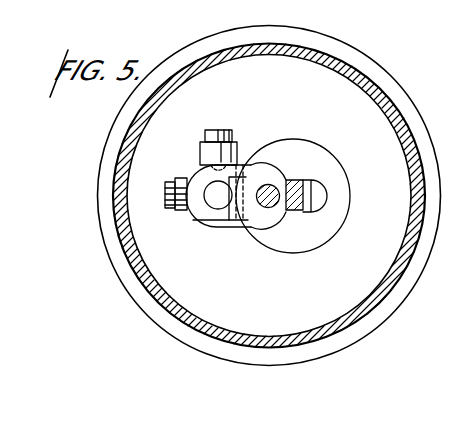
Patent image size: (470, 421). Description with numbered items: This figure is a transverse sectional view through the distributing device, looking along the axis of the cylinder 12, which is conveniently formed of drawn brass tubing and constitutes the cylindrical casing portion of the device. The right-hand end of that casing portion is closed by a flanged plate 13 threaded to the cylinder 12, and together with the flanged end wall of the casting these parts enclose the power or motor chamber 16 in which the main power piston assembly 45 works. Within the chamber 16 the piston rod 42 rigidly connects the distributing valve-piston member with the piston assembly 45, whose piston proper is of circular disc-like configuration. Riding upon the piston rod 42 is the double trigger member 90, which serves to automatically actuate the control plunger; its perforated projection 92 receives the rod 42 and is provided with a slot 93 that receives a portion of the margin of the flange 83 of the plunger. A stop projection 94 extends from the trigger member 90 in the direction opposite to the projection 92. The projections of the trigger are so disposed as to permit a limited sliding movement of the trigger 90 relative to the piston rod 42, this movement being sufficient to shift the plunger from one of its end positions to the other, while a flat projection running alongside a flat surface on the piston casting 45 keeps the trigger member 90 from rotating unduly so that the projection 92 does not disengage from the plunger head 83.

The cylinder 12 is at (398, 121).
The flanged plate 13 is at (358, 58).
The power or motor chamber 16 is at (305, 50).
The main power piston assembly 45 is at (212, 308).
The flange of the plunger 83 is at (210, 204).
The double trigger member 90 is at (307, 178).
The perforated projection 92 is at (240, 220).
The slot 93 is at (250, 177).
The stop projection 94 is at (303, 212).
The piston rod 42 is at (271, 203).